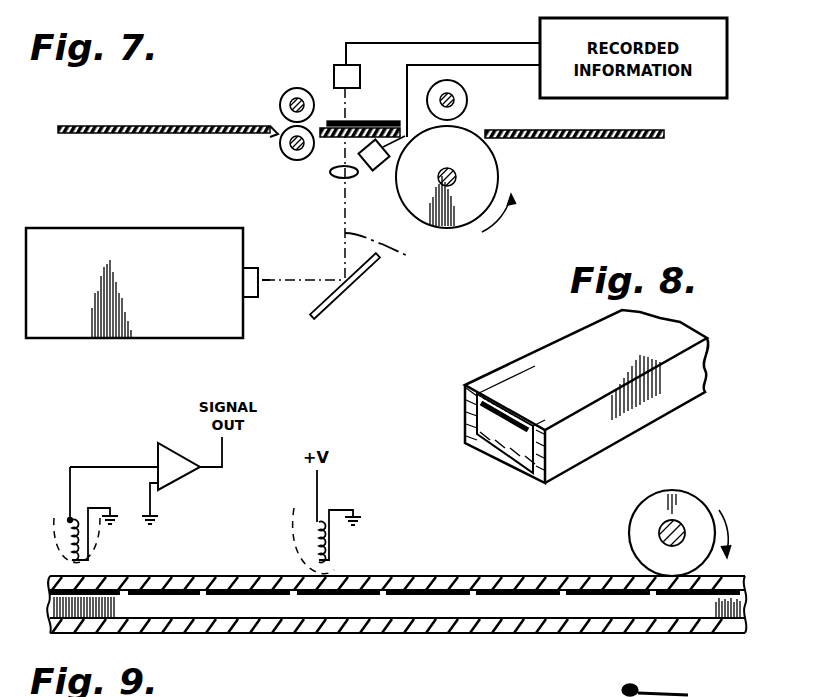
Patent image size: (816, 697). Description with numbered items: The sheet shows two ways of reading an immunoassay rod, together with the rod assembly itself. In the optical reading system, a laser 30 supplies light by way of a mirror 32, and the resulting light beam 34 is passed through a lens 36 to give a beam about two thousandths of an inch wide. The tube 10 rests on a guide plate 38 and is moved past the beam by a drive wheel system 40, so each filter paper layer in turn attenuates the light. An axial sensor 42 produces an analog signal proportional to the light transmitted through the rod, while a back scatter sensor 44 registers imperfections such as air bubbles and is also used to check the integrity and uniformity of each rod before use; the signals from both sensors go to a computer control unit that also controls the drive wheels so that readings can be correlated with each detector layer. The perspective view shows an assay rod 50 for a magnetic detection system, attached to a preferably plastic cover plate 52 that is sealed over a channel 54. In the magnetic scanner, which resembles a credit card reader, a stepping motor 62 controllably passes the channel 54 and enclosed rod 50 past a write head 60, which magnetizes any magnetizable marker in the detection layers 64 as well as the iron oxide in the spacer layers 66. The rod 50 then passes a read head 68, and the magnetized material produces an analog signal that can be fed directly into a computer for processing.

In FIG. 7, the tube 10 is at (378, 121).
In FIG. 7, the laser 30 is at (72, 250).
In FIG. 7, the mirror 32 is at (328, 306).
In FIG. 7, the light beam 34 is at (395, 255).
In FIG. 7, the lens 36 is at (330, 176).
In FIG. 7, the guide plate 38 is at (626, 139).
In FIG. 7, the drive wheel system 40 is at (286, 92).
In FIG. 7, the axial sensor 42 is at (334, 69).
In FIG. 7, the back scatter sensor 44 is at (377, 168).
In FIG. 8, the assay rod 50 is at (476, 446).
In FIG. 9, the assay rod 50 is at (512, 598).
In FIG. 8, the cover plate 52 is at (612, 320).
In FIG. 9, the cover plate 52 is at (518, 585).
In FIG. 8, the channel 54 is at (666, 396).
In FIG. 9, the channel 54 is at (262, 625).
In FIG. 9, the write head 60 is at (337, 549).
In FIG. 9, the stepping motor 62 is at (690, 510).
In FIG. 9, the detection layers 64 is at (228, 578).
In FIG. 9, the spacer layers 66 is at (714, 600).
In FIG. 9, the read head 68 is at (60, 546).